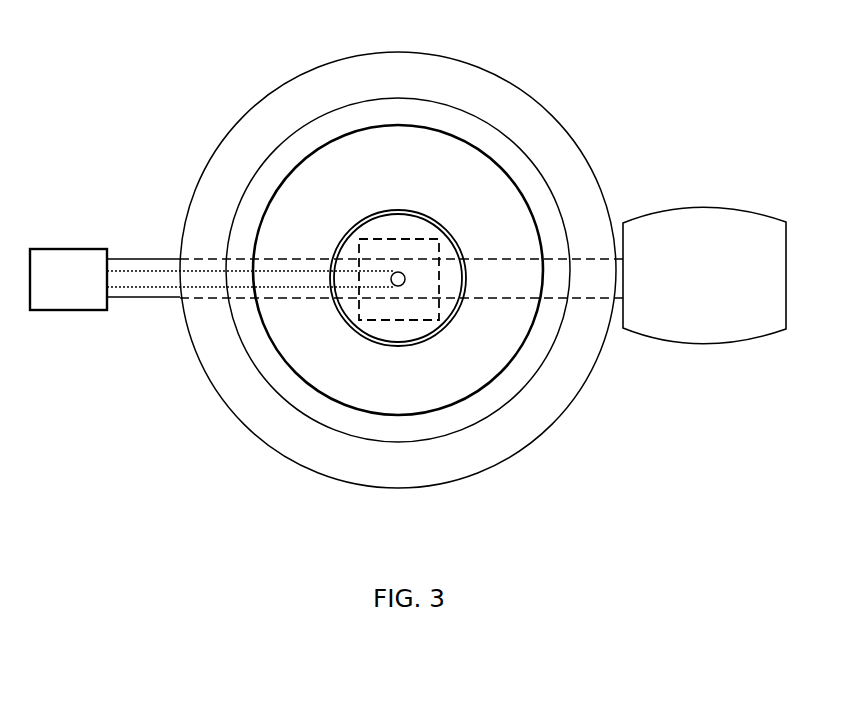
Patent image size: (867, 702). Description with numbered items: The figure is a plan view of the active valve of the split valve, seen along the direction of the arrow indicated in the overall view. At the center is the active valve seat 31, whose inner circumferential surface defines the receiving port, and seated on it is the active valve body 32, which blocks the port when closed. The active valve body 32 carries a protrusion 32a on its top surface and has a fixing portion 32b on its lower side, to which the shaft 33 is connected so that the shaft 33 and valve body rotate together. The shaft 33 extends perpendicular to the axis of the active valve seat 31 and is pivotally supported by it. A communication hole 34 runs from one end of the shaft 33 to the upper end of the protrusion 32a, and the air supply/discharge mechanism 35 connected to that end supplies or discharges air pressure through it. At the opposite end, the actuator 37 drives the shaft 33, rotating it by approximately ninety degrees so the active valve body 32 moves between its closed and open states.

The active valve seat 31 is at (508, 103).
The active valve body 32 is at (500, 212).
The protrusion 32a is at (440, 222).
The fixing portion 32b is at (385, 320).
The shaft 33 is at (140, 259).
The communication hole 34 is at (172, 280).
The air supply/discharge mechanism 35 is at (43, 310).
The actuator 37 is at (688, 217).